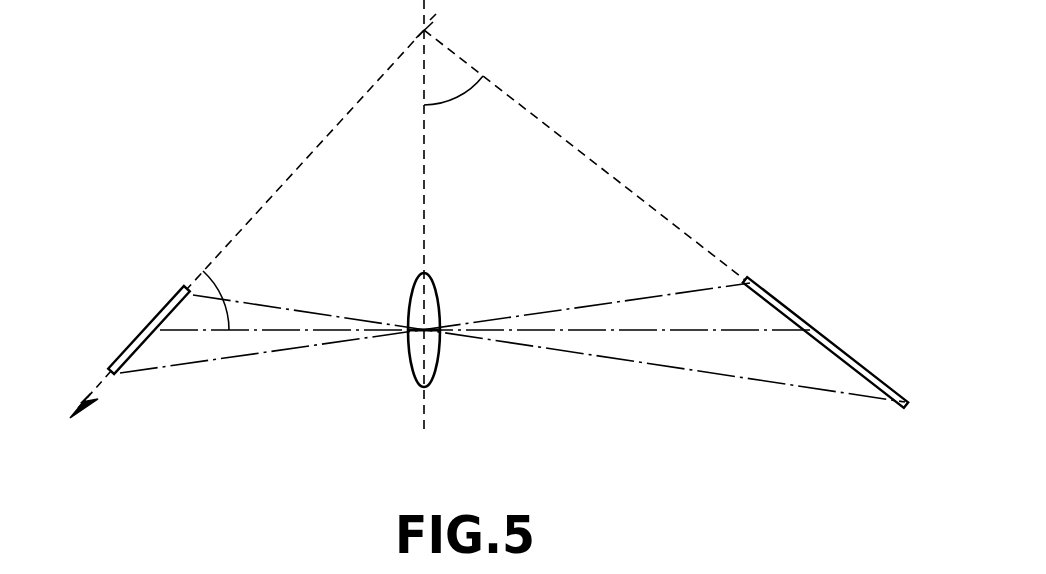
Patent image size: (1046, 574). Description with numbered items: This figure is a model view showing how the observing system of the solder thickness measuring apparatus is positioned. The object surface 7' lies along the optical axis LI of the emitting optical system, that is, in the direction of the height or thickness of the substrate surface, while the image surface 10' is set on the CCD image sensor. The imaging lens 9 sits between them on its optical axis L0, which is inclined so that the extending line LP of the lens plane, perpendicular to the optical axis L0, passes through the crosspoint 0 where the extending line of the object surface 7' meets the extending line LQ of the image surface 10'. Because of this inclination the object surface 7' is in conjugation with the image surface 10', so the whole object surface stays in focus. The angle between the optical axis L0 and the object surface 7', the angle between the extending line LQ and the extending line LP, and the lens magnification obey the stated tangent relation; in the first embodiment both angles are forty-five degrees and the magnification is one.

The object surface 7' is at (130, 349).
The image surface 10' is at (825, 342).
The imaging lens 9 is at (438, 366).
The crosspoint 0 is at (426, 32).
The optical axis of the emitting optical system LI is at (280, 190).
The extending line of the image surface LQ is at (652, 204).
The extending line of the lens plane LP is at (426, 200).
The optical axis of the imaging lens L0 is at (328, 329).